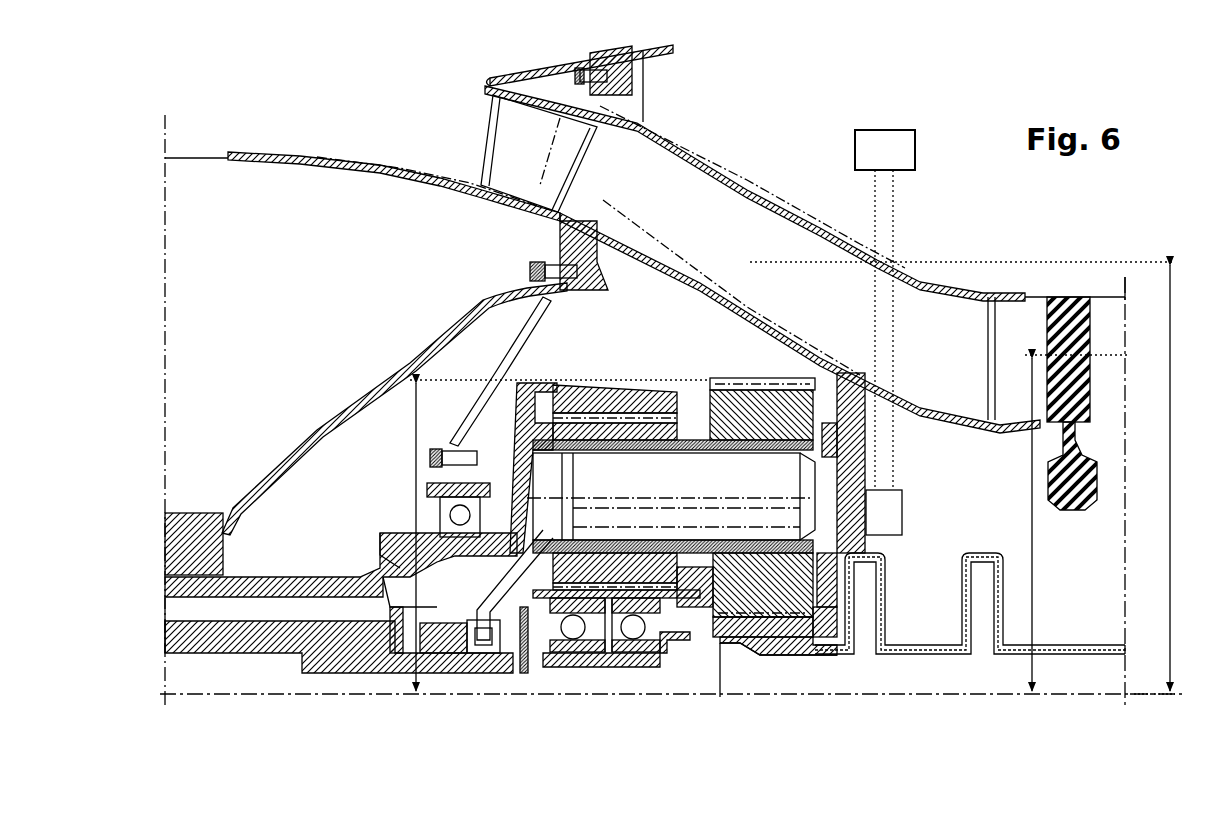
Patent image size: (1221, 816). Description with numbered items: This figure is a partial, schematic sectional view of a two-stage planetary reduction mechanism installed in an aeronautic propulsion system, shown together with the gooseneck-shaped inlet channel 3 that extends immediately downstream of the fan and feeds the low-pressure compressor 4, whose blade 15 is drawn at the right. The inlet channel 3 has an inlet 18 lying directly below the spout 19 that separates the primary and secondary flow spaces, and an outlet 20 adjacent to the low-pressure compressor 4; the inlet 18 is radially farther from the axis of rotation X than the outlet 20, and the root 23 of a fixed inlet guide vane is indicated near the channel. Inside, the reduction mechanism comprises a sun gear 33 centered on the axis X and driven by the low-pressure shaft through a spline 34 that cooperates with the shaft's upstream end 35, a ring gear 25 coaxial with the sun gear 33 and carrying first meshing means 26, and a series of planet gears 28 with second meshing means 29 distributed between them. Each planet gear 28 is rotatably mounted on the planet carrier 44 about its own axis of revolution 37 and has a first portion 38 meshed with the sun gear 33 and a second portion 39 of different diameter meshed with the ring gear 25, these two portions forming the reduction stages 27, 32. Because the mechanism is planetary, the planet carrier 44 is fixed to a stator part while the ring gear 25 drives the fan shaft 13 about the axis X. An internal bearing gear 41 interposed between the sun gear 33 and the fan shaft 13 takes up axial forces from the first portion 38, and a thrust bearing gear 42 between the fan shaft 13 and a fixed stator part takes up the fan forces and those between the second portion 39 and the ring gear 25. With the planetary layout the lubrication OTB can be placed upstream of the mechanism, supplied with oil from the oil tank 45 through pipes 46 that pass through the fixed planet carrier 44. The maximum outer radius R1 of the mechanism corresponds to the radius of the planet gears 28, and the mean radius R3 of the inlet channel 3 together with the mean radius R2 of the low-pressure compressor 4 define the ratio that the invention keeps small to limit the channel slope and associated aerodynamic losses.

The inlet channel 3 is at (539, 153).
The low-pressure compressor 4 is at (1078, 288).
The fan shaft 13 is at (297, 590).
The blade 15 is at (1087, 330).
The inlet 18 is at (460, 155).
The spout 19 is at (553, 70).
The outlet 20 is at (1035, 343).
The root 23 is at (230, 643).
The ring gear 25 is at (589, 390).
The first meshing means 26 is at (630, 418).
The reduction stage 27 is at (753, 662).
The planet gears 28 is at (813, 370).
The second meshing means 29 is at (616, 575).
The reduction stage 32 is at (597, 672).
The sun gear 33 is at (733, 647).
The spline 34 is at (807, 623).
The upstream end 35 is at (937, 663).
The axis of revolution 37 is at (717, 497).
The first portion 38 is at (767, 623).
The second portion 39 is at (627, 667).
The internal bearing gear 41 is at (560, 667).
The thrust bearing gear 42 is at (407, 503).
The planet carrier 44 is at (870, 542).
The oil tank 45 is at (885, 310).
The pipes 46 is at (783, 515).
The oil transfer bearing gear OTB is at (452, 673).
The maximum outer radius R1 is at (558, 535).
The mean radius R2 is at (1075, 523).
The mean radius R3 is at (966, 478).
The axis of rotation X is at (1083, 697).